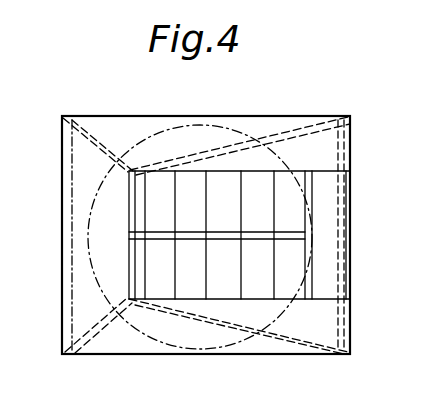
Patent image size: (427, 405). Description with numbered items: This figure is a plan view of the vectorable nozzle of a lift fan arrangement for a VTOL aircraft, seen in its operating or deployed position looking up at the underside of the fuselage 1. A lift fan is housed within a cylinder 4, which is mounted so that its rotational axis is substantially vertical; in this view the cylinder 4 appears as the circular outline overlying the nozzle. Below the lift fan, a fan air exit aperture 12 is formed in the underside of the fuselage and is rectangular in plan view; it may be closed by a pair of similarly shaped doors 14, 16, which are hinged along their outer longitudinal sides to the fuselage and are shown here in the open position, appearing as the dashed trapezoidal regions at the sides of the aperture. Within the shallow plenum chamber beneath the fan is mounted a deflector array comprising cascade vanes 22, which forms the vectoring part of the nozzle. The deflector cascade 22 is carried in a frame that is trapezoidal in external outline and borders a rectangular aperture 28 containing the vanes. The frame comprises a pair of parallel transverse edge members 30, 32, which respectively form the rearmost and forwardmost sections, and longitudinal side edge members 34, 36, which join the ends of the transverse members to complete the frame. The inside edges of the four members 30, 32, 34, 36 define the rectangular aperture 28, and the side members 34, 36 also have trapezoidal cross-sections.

The fuselage 1 is at (0, 7).
The lift fan cylinder 4 is at (246, 132).
The fan air exit aperture 12 is at (122, 116).
The door 14 is at (113, 336).
The door 16 is at (108, 135).
The cascade vanes 22 is at (232, 268).
The rectangular aperture 28 is at (254, 296).
The transverse edge member 30 is at (323, 225).
The transverse edge member 32 is at (130, 210).
The longitudinal side edge member 34 is at (317, 319).
The longitudinal side edge member 36 is at (322, 150).